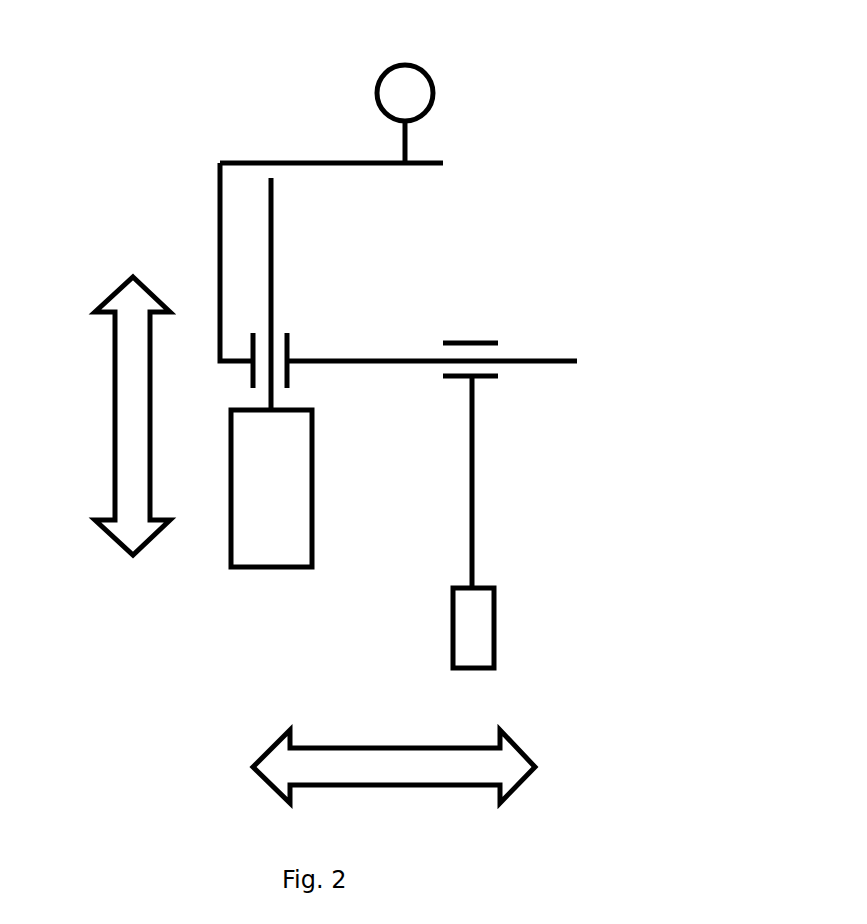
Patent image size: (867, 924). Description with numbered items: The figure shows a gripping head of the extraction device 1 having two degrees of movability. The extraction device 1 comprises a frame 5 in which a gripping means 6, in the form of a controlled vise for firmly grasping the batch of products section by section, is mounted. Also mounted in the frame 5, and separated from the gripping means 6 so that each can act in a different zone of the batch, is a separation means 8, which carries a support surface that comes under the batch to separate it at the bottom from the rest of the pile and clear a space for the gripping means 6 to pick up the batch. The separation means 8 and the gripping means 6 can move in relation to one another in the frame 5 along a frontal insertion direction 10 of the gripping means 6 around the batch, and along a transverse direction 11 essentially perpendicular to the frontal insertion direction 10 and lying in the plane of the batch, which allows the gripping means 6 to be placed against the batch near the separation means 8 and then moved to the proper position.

The extraction device 1 is at (618, 165).
The frame 5 is at (470, 117).
The gripping means 6 is at (205, 578).
The separation means 8 is at (468, 633).
The frontal insertion direction 10 is at (137, 433).
The transverse direction 11 is at (507, 763).